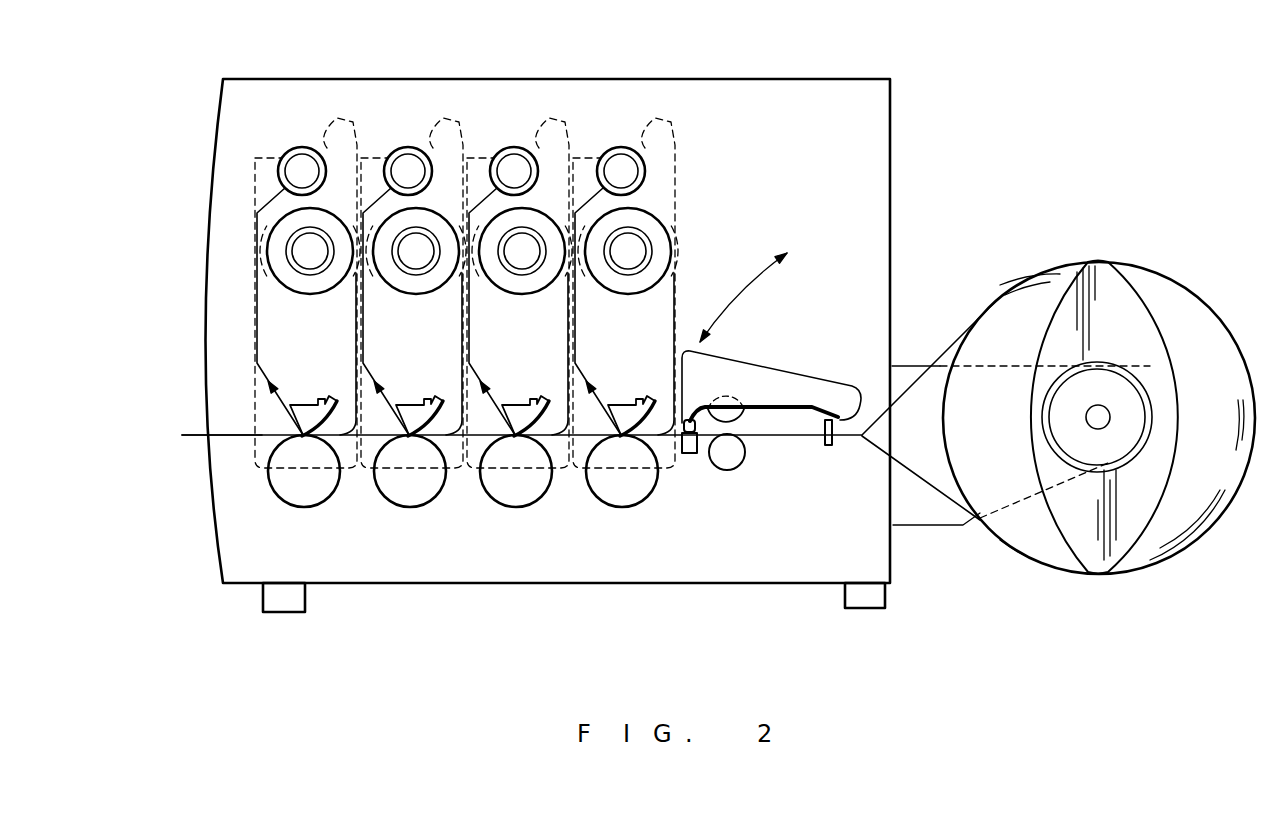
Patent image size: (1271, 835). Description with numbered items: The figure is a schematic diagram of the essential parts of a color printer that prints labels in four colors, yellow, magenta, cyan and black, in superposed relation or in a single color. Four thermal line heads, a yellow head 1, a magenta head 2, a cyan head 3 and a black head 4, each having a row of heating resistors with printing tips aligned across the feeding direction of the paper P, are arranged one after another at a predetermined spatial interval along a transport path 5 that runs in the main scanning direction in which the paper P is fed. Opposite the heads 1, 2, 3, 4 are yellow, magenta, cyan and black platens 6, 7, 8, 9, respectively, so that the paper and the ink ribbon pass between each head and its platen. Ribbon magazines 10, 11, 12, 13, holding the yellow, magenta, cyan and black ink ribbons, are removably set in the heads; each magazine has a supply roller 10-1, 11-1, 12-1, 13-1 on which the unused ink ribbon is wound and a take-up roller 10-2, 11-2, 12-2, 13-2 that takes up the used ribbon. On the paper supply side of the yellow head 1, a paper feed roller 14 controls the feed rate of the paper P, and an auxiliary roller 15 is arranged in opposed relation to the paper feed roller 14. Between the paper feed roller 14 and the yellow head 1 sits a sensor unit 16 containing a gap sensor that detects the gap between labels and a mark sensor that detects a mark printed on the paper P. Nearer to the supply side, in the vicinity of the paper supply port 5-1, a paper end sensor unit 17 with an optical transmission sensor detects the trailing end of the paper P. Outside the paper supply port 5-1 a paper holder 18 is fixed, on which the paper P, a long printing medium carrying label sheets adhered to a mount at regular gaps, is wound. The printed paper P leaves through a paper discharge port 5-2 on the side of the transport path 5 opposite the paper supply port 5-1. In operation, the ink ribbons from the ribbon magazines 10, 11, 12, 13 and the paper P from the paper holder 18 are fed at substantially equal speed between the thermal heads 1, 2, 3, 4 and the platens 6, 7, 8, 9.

The yellow head 1 is at (630, 405).
The magenta head 2 is at (524, 405).
The cyan head 3 is at (418, 405).
The black head 4 is at (312, 405).
The transport path 5 is at (235, 437).
The paper supply port 5-1 is at (912, 417).
The paper discharge port 5-2 is at (195, 433).
The yellow platen 6 is at (623, 507).
The magenta platen 7 is at (517, 507).
The cyan platen 8 is at (411, 507).
The black platen 9 is at (305, 507).
The ribbon magazine 10 is at (660, 117).
The supply roller 10-1 is at (648, 232).
The take-up roller 10-2 is at (646, 166).
The ribbon magazine 11 is at (554, 117).
The supply roller 11-1 is at (530, 228).
The take-up roller 11-2 is at (512, 147).
The ribbon magazine 12 is at (448, 117).
The supply roller 12-1 is at (424, 228).
The take-up roller 12-2 is at (402, 147).
The ribbon magazine 13 is at (342, 117).
The supply roller 13-1 is at (288, 246).
The take-up roller 13-2 is at (295, 148).
The paper feed roller 14 is at (728, 471).
The auxiliary roller 15 is at (746, 417).
The sensor unit 16 is at (693, 417).
The paper end sensor unit 17 is at (828, 447).
The paper holder 18 is at (1082, 528).
The paper P is at (1177, 282).